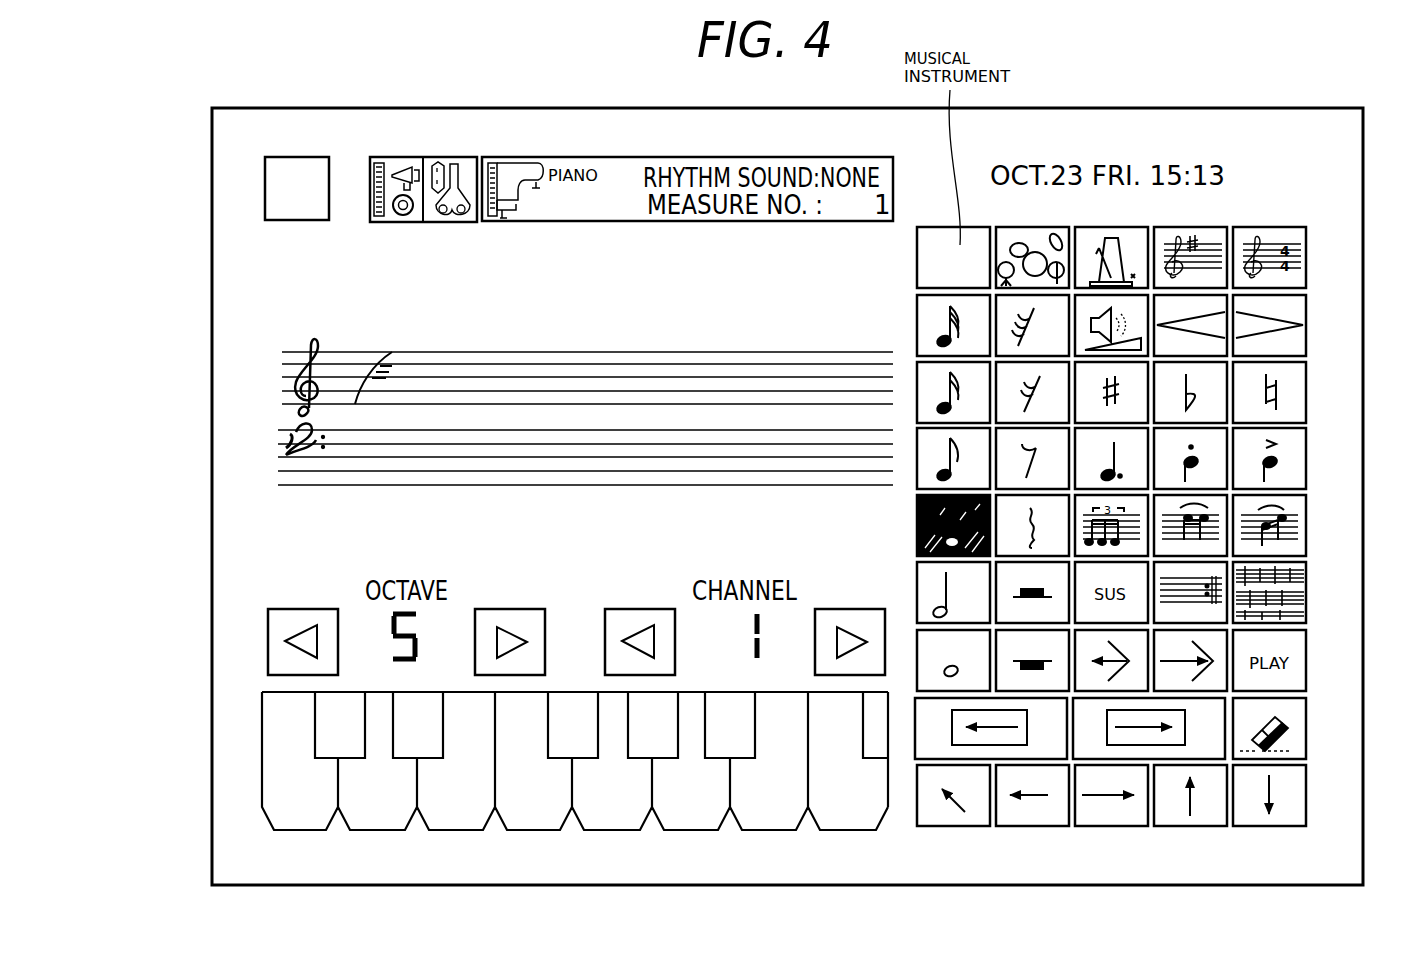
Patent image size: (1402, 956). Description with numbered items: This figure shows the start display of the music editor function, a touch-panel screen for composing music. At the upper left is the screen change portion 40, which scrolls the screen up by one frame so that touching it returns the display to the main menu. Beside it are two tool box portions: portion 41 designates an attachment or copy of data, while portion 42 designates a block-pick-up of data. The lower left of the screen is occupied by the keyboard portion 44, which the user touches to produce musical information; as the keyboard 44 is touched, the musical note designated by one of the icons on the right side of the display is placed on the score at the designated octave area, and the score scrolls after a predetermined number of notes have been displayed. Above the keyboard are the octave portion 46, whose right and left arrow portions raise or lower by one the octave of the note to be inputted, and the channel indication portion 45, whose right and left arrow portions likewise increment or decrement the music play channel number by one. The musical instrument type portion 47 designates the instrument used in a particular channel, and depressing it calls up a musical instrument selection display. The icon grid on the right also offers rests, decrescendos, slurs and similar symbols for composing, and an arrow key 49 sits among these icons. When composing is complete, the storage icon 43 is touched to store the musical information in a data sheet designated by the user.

The screen change portion 40 is at (320, 210).
The tool box portion for attachment or copy of data 41 is at (413, 222).
The tool box portion for block-pick-up of data 42 is at (462, 222).
The storage icon 43 is at (1211, 682).
The keyboard portion 44 is at (288, 769).
The channel indication portion 45 is at (616, 617).
The octave portion 46 is at (279, 617).
The musical instrument type portion 47 is at (917, 268).
The left arrow key 49 is at (1088, 682).